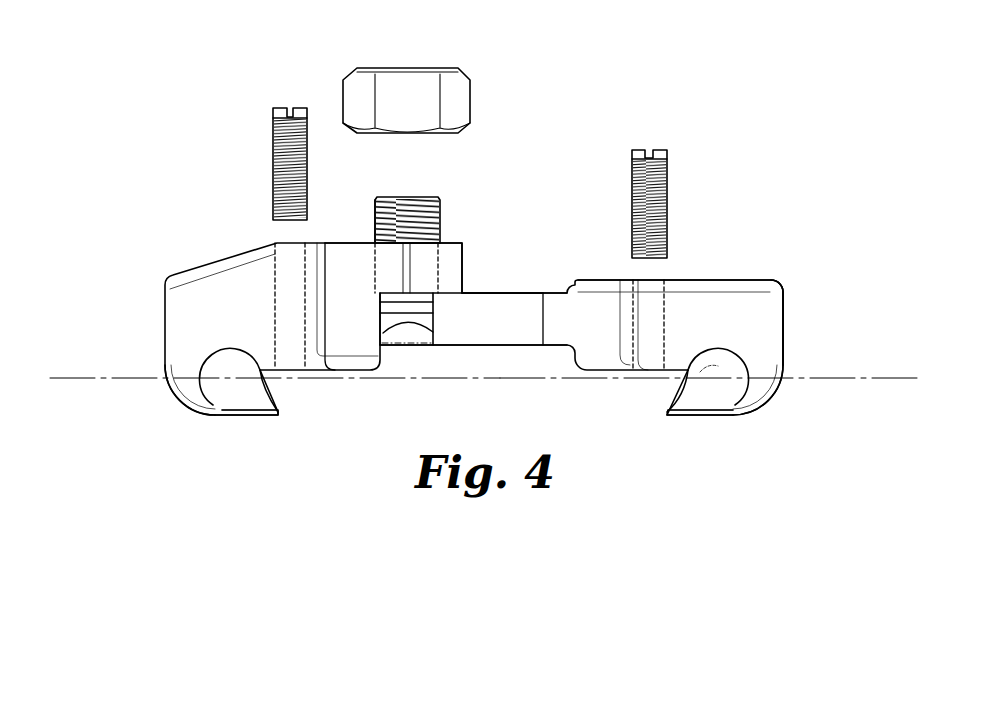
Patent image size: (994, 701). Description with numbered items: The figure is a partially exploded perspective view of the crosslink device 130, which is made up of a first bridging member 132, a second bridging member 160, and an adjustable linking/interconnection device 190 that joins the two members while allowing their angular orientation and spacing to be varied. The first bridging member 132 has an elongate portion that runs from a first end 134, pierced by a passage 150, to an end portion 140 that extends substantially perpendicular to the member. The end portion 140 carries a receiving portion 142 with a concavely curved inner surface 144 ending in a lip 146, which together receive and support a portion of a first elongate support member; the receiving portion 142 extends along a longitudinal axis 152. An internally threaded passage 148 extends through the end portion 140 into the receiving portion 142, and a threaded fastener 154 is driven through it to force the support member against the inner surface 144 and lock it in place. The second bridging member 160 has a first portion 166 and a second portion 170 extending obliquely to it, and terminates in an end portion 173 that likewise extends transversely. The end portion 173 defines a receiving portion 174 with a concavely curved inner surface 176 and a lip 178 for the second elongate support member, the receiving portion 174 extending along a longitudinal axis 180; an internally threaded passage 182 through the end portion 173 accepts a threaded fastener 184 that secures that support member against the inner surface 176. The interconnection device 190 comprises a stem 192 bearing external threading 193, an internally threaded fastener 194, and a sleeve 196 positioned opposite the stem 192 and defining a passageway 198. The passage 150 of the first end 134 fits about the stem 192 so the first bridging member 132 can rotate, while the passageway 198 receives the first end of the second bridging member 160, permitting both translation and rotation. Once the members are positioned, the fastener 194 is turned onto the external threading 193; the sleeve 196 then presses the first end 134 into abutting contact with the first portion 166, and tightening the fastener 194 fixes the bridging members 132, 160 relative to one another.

The crosslink device 130 is at (126, 320).
The first bridging member 132 is at (485, 248).
The first end 134 is at (465, 300).
The end portion 140 is at (173, 275).
The receiving portion 142 is at (252, 415).
The inner surface 144 is at (213, 406).
The lip 146 is at (268, 416).
The internally threaded passage 148 is at (247, 253).
The passage 150 is at (462, 243).
The longitudinal axis 152 is at (72, 378).
The threaded fastener 154 is at (275, 130).
The second bridging member 160 is at (541, 375).
The first portion 166 is at (505, 293).
The second portion 170 is at (578, 280).
The end portion 173 is at (752, 280).
The receiving portion 174 is at (700, 415).
The inner surface 176 is at (712, 380).
The lip 178 is at (672, 415).
The longitudinal axis 180 is at (874, 378).
The internally threaded passage 182 is at (668, 290).
The threaded fastener 184 is at (667, 162).
The adjustable linking/interconnection device 190 is at (352, 205).
The stem 192 is at (440, 197).
The external threading 193 is at (378, 205).
The internally threaded fastener 194 is at (373, 57).
The sleeve 196 is at (406, 335).
The passageway 198 is at (375, 335).